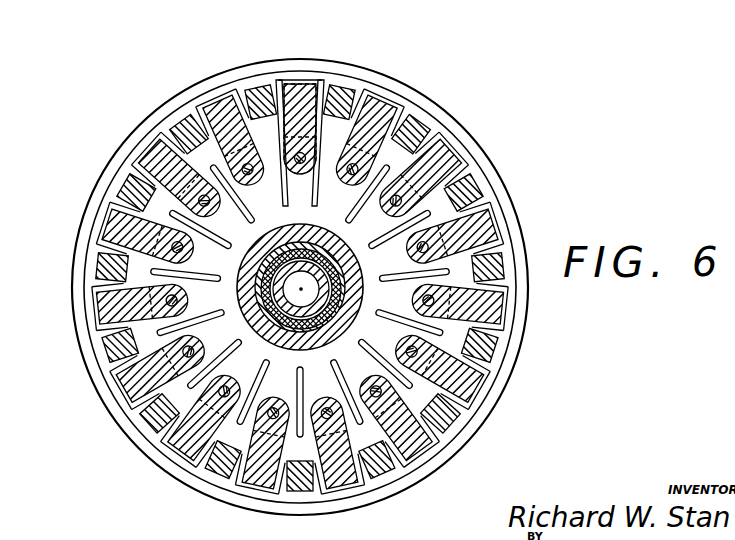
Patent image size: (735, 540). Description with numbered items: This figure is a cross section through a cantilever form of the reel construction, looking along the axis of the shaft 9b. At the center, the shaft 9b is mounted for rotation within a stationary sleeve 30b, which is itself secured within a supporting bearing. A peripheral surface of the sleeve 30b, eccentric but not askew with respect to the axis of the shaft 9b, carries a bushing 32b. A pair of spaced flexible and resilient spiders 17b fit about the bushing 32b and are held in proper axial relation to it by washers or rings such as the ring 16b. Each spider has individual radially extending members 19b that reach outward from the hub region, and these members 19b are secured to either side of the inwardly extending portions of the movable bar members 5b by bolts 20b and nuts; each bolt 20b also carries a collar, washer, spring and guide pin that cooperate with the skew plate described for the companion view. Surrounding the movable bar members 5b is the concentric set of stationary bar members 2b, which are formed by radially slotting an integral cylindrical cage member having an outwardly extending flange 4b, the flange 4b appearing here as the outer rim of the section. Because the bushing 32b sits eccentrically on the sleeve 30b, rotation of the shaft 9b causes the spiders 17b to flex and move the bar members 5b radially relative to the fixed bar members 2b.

The bar members 2b is at (258, 98).
The outwardly extending flange 4b is at (148, 128).
The movable bar members 5b is at (226, 116).
The shaft 9b is at (307, 303).
The washers or rings 16b is at (244, 283).
The flexible and resilient spiders 17b is at (240, 268).
The radially extending members 19b is at (135, 339).
The bolts 20b is at (300, 165).
The stationary sleeve 30b is at (333, 266).
The bushing 32b is at (322, 247).